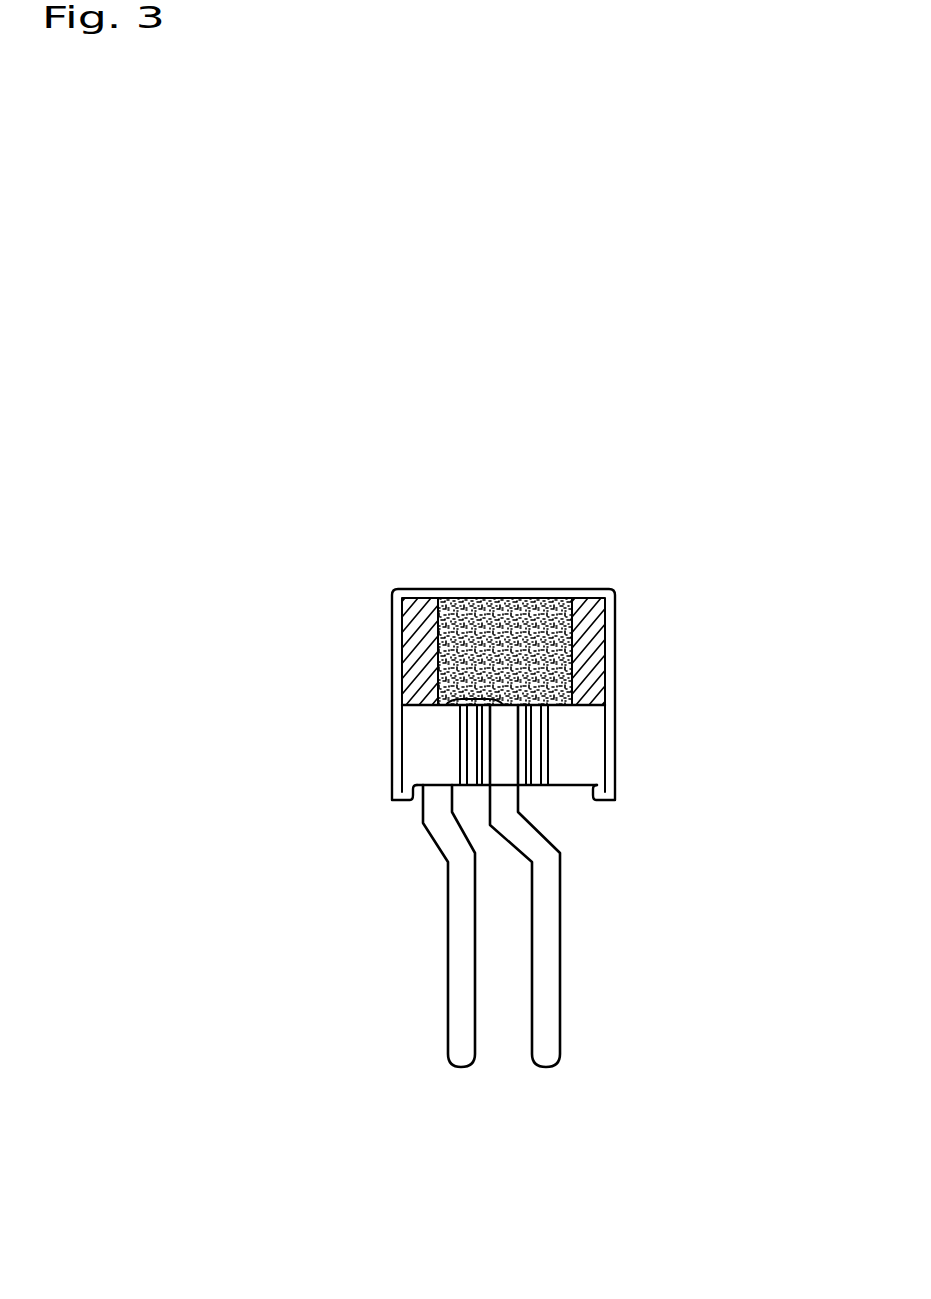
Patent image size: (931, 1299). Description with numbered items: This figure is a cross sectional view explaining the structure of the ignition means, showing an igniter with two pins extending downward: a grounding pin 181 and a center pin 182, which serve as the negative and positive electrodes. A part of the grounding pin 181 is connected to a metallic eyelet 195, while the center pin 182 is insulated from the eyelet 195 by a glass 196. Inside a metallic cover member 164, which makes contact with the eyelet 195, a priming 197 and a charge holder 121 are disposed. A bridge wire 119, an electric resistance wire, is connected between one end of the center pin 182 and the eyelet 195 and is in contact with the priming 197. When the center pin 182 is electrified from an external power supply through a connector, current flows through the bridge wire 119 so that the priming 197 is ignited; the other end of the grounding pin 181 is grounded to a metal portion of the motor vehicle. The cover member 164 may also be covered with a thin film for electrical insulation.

The cover member 164 is at (421, 590).
The priming 197 is at (548, 605).
The charge holder 121 is at (598, 628).
The bridge wire 119 is at (470, 698).
The eyelet 195 is at (417, 752).
The glass 196 is at (533, 743).
The grounding pin 181 is at (453, 1040).
The center pin 182 is at (548, 1040).